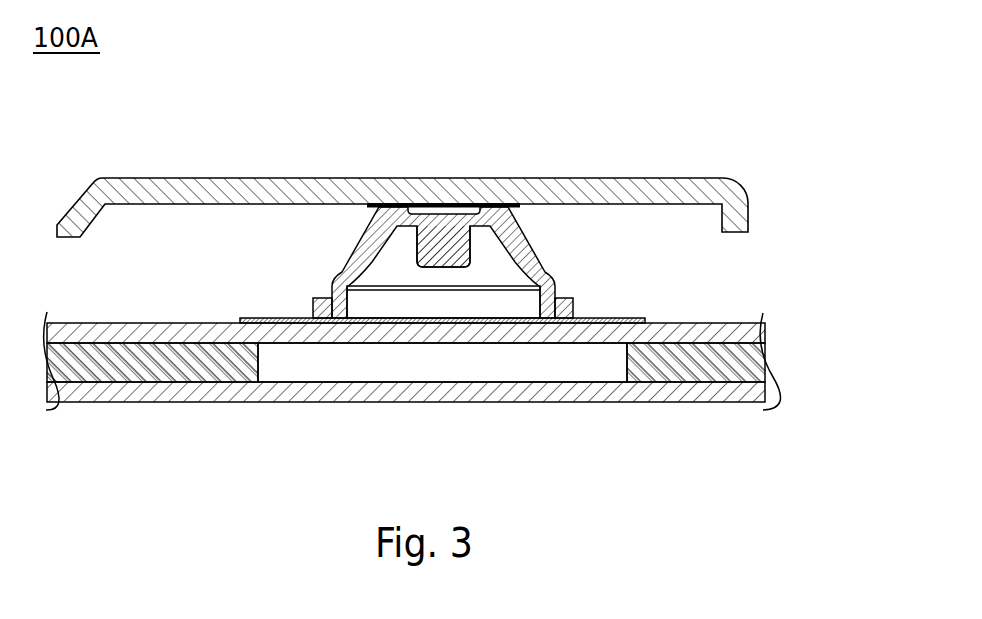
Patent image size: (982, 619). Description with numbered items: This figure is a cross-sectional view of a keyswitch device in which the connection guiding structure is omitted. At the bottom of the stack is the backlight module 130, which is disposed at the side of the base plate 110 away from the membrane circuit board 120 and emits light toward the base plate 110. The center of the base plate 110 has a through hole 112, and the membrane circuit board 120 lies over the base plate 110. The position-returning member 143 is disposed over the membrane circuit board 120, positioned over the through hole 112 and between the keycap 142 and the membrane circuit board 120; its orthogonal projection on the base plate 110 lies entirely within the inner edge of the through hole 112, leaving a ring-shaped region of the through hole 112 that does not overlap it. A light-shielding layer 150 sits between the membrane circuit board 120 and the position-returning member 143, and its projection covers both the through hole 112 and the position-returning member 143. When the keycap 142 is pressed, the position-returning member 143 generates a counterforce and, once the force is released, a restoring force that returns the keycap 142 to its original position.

The base plate 110 is at (752, 361).
The through hole 112 is at (318, 376).
The membrane circuit board 120 is at (750, 333).
The backlight module 130 is at (752, 390).
The keycap 142 is at (493, 204).
The position-returning member 143 is at (435, 238).
The light-shielding layer 150 is at (497, 320).